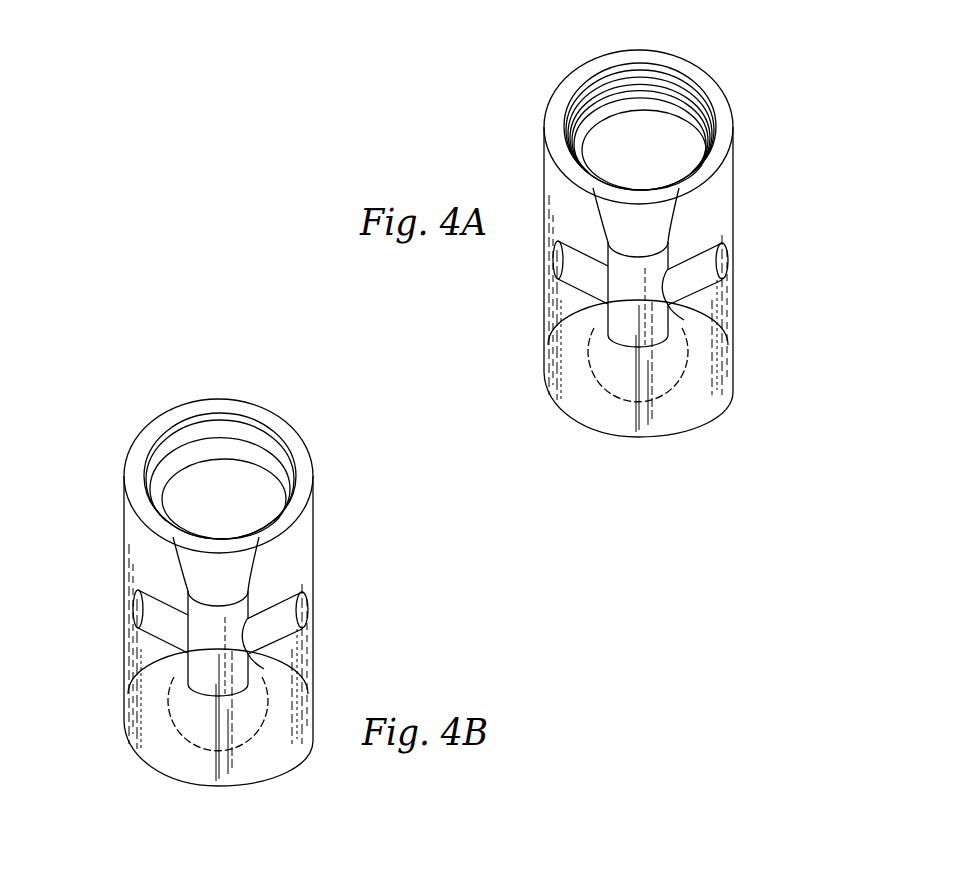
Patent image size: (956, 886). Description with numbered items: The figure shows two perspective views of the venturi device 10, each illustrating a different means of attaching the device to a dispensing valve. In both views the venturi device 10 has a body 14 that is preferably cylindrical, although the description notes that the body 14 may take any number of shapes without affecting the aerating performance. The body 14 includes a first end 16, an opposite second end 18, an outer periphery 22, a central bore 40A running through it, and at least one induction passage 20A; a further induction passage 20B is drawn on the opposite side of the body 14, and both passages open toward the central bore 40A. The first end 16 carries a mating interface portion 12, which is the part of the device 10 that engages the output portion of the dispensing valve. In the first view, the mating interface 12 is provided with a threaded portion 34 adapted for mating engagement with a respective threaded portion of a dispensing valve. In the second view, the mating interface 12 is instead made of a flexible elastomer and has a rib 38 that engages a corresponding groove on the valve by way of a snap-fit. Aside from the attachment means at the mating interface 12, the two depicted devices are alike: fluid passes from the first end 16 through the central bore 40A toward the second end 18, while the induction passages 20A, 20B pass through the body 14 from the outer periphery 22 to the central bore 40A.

In FIG. 4A, the venturi device 10 is at (531, 168).
In FIG. 4B, the venturi device 10 is at (113, 516).
In FIG. 4A, the mating interface portion 12 is at (567, 87).
In FIG. 4B, the mating interface portion 12 is at (158, 422).
In FIG. 4A, the body 14 is at (720, 193).
In FIG. 4B, the body 14 is at (140, 560).
In FIG. 4A, the first end 16 is at (722, 107).
In FIG. 4B, the first end 16 is at (300, 448).
In FIG. 4A, the second end 18 is at (592, 423).
In FIG. 4B, the second end 18 is at (158, 763).
In FIG. 4A, the induction passage 20A is at (725, 262).
In FIG. 4B, the induction passage 20A is at (307, 612).
In FIG. 4A, the second side port 20B is at (545, 255).
In FIG. 4B, the second side port 20B is at (127, 605).
In FIG. 4A, the outer periphery 22 is at (550, 363).
In FIG. 4B, the outer periphery 22 is at (132, 690).
In FIG. 4A, the threaded portion 34 is at (607, 80).
In FIG. 4B, the rib 38 is at (242, 413).
In FIG. 4A, the central bore 40A is at (660, 316).
In FIG. 4B, the central bore 40A is at (240, 668).